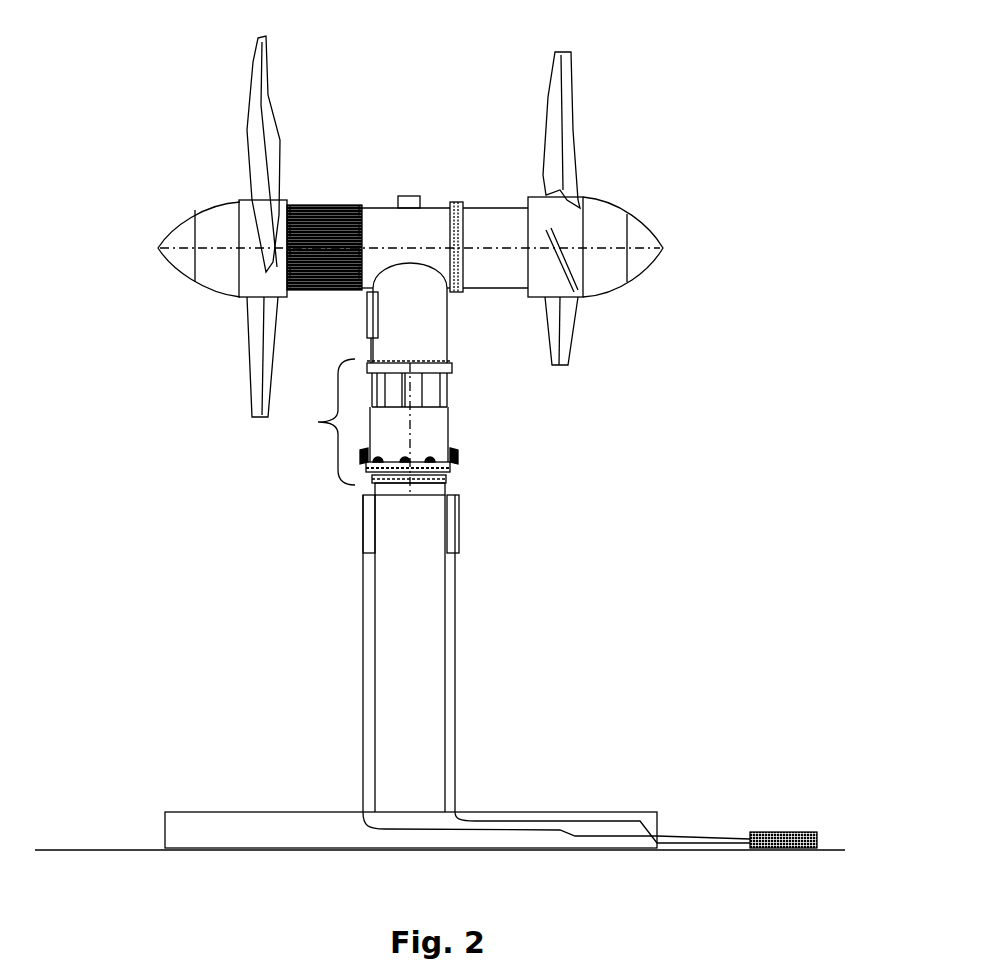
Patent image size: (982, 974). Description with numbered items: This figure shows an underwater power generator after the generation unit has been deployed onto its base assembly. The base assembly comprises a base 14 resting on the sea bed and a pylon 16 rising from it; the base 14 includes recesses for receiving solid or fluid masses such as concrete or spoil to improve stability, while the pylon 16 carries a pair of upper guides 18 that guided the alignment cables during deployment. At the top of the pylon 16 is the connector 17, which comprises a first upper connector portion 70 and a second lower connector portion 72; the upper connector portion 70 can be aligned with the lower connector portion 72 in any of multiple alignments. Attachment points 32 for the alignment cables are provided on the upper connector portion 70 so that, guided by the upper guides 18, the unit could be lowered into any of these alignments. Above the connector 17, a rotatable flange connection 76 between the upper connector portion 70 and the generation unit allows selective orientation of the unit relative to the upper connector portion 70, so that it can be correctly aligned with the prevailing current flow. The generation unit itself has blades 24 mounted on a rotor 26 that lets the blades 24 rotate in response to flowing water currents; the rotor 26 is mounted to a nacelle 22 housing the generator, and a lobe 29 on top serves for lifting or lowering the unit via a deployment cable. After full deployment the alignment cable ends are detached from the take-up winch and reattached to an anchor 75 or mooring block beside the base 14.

The base 14 is at (212, 836).
The pylon 16 is at (405, 707).
The connector 17 is at (312, 433).
The upper guides 18 is at (378, 541).
The nacelle 22 is at (472, 222).
The blades 24 is at (250, 128).
The rotor 26 is at (233, 245).
The lobe 29 is at (408, 195).
The attachment points 32 is at (457, 453).
The upper connector portion 70 is at (440, 421).
The lower connector portion 72 is at (430, 464).
The anchor 75 is at (775, 830).
The rotatable flange connection 76 is at (448, 371).